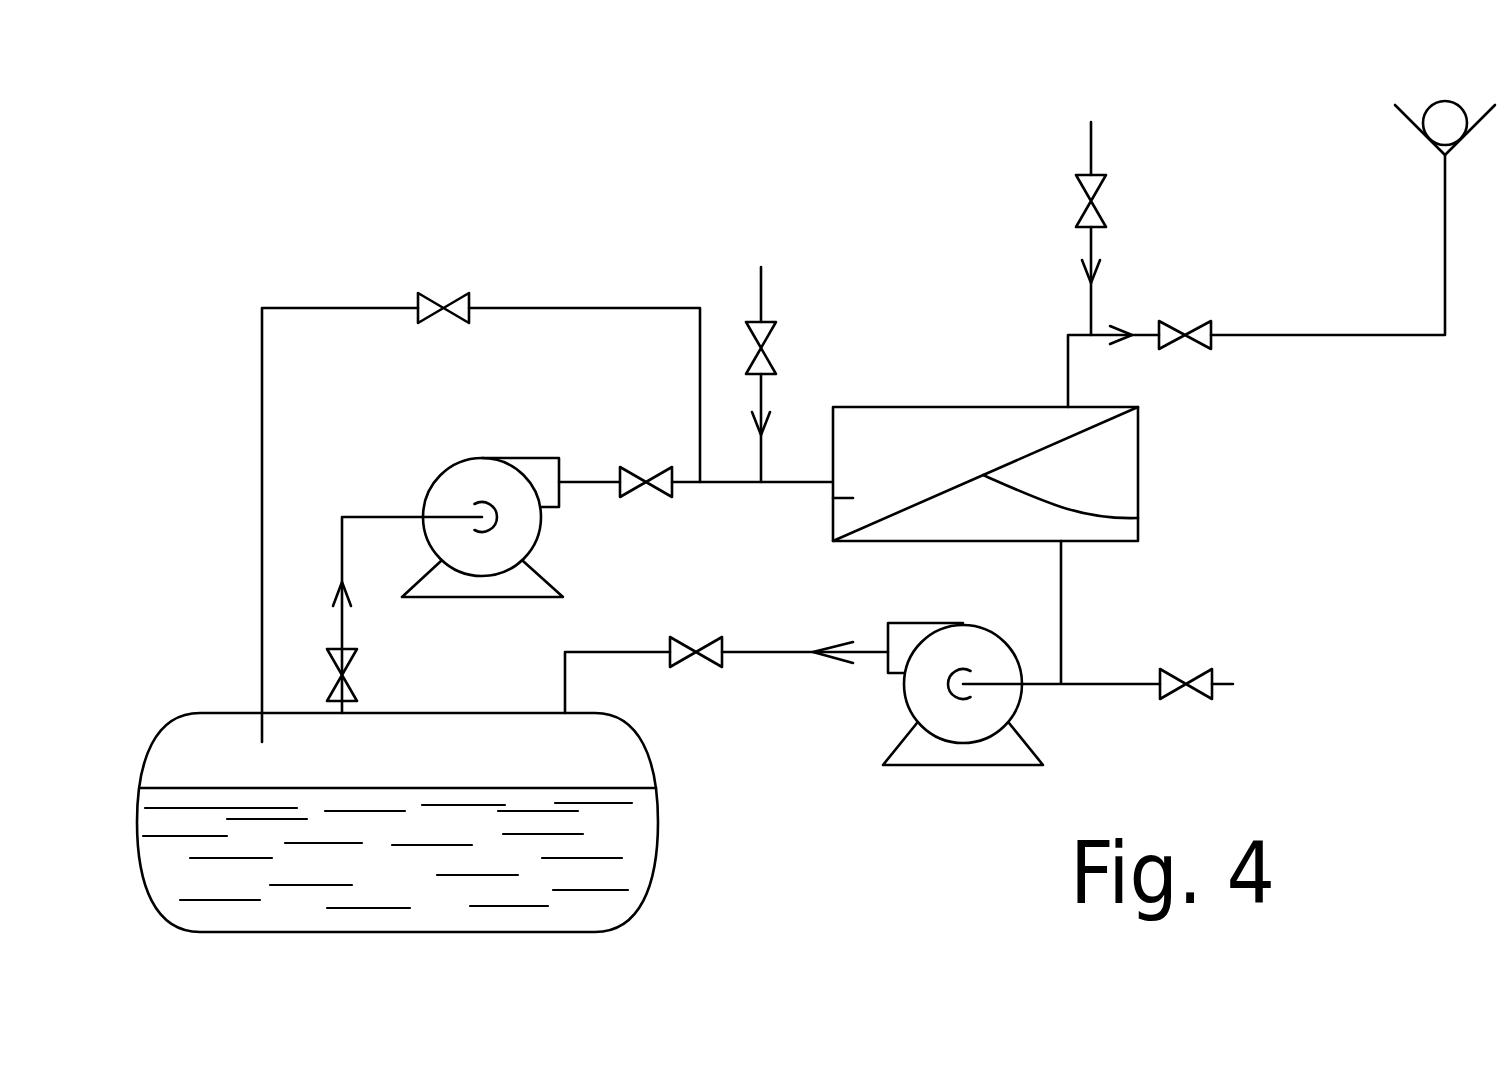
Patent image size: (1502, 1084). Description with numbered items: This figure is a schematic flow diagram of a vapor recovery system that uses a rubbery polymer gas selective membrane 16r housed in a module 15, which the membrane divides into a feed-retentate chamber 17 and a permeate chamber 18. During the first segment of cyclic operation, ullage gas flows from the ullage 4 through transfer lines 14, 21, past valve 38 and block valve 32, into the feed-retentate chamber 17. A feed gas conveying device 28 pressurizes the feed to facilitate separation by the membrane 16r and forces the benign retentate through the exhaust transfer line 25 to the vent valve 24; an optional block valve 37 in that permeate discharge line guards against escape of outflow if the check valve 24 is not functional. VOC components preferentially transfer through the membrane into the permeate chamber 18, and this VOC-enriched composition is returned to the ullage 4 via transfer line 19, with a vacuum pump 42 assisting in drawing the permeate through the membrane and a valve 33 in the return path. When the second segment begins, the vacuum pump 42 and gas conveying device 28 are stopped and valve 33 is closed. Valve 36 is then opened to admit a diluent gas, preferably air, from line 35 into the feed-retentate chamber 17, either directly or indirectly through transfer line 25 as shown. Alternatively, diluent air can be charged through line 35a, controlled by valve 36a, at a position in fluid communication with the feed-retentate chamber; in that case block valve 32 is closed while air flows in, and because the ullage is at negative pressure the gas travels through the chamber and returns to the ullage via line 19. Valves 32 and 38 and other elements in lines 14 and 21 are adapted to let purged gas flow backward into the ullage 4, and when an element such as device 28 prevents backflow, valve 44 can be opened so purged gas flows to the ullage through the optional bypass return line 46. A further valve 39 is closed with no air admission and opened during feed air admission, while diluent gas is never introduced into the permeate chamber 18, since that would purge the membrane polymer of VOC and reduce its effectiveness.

The ullage 4 is at (612, 772).
The transfer line 14 is at (395, 517).
The valve 38 is at (355, 665).
The feed gas conveying device 28 is at (448, 470).
The transfer line 21 is at (583, 480).
The block valve 32 is at (657, 468).
The bypass return line 46 is at (365, 308).
The valve 44 is at (468, 308).
The line 35a is at (757, 297).
The valve 36a is at (777, 327).
The module 15 is at (880, 407).
The permeate chamber 18 is at (1112, 462).
The rubbery polymer gas selective membrane 16r is at (1138, 518).
The feed-retentate chamber 17 is at (853, 498).
The line 35 is at (1089, 147).
The valve 36 is at (1108, 178).
The transfer line 25 is at (1403, 335).
The block valve 37 is at (1210, 322).
The vent valve 24 is at (1422, 130).
The transfer line 19 is at (755, 652).
The valve 33 is at (715, 637).
The vacuum pump 42 is at (1020, 715).
The valve 39 is at (1160, 672).